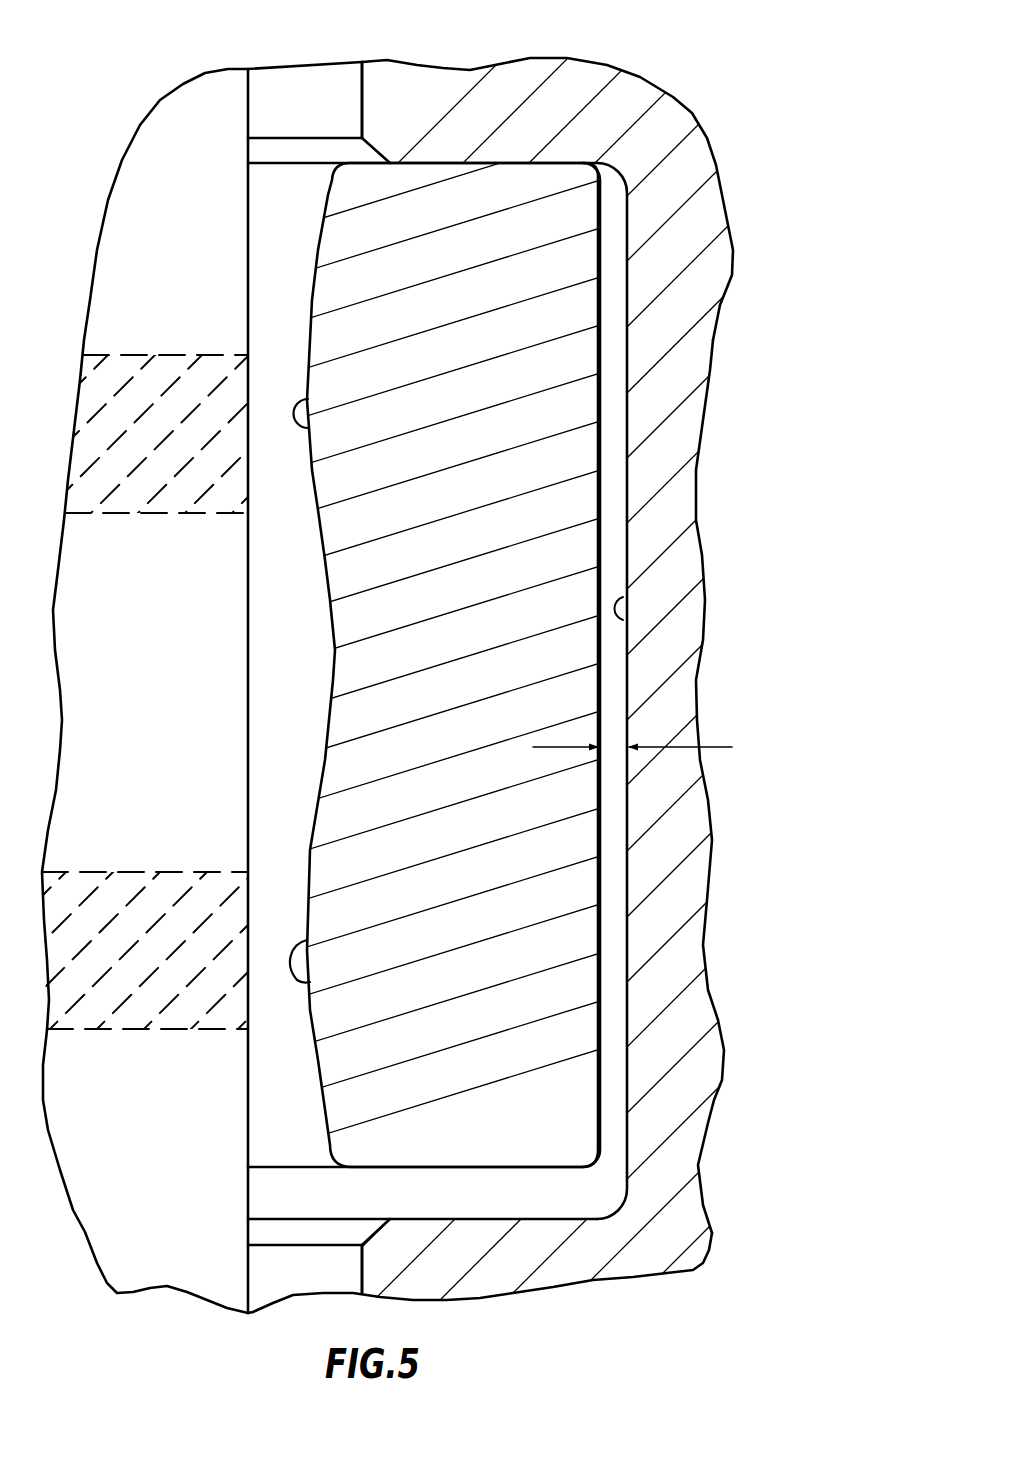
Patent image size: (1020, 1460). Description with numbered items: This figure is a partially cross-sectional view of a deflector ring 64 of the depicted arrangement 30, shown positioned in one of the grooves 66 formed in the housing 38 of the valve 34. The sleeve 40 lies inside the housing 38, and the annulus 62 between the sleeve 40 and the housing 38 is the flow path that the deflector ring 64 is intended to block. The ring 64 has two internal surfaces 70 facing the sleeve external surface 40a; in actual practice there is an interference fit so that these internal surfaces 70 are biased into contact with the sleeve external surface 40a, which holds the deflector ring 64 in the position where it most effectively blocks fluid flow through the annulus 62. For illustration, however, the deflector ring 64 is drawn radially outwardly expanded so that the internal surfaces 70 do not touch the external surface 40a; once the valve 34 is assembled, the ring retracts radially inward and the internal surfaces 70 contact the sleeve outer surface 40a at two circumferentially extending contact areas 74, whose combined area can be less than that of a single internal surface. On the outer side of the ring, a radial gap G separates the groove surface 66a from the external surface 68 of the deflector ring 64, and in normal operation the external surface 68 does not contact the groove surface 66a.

The sealing assembly 30 is at (510, 660).
The valve 34 is at (727, 1066).
The housing 38 is at (702, 428).
The sleeve 40 is at (300, 667).
The sleeve external surface 40a is at (253, 692).
The annulus 62 is at (350, 97).
The deflector ring 64 is at (517, 1167).
The groove 66 is at (545, 623).
The groove surface 66a is at (623, 620).
The external surface of the deflector ring 68 is at (600, 547).
The internal surfaces 70 is at (308, 428).
The contact areas 74 is at (180, 355).
The radial gap G is at (732, 747).